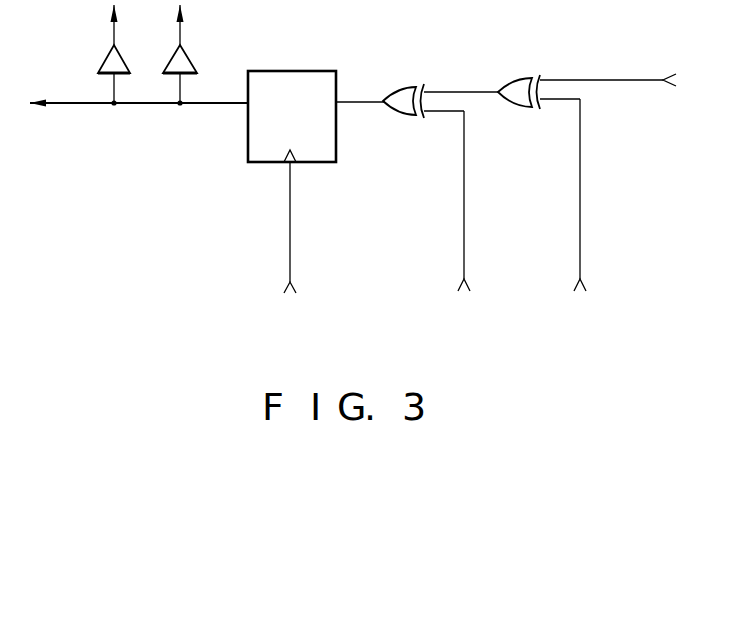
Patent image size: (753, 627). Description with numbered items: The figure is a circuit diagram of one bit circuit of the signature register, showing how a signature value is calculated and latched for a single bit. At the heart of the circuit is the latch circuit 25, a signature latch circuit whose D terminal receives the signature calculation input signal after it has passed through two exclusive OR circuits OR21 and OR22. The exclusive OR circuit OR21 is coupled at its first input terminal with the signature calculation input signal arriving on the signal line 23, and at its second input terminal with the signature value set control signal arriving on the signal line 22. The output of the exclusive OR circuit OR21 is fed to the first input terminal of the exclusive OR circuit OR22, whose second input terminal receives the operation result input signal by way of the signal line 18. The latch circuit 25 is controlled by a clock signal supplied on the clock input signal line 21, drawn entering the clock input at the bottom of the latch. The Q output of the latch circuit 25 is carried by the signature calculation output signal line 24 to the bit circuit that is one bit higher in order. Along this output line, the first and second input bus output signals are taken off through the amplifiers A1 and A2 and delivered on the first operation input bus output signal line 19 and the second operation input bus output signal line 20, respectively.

The operation result input signal line 18 is at (466, 225).
The first operation input bus output signal line 19 is at (182, 27).
The second operation input bus output signal line 20 is at (112, 30).
The clock input signal line 21 is at (292, 236).
The signature value set control signal line 22 is at (582, 232).
The signature calculation input signal line 23 is at (616, 80).
The signature calculation output signal line 24 is at (72, 106).
The latch circuit 25 is at (307, 71).
The amplifier A1 is at (197, 57).
The amplifier A2 is at (98, 63).
The exclusive OR circuit OR21 is at (518, 78).
The exclusive OR circuit OR22 is at (402, 85).